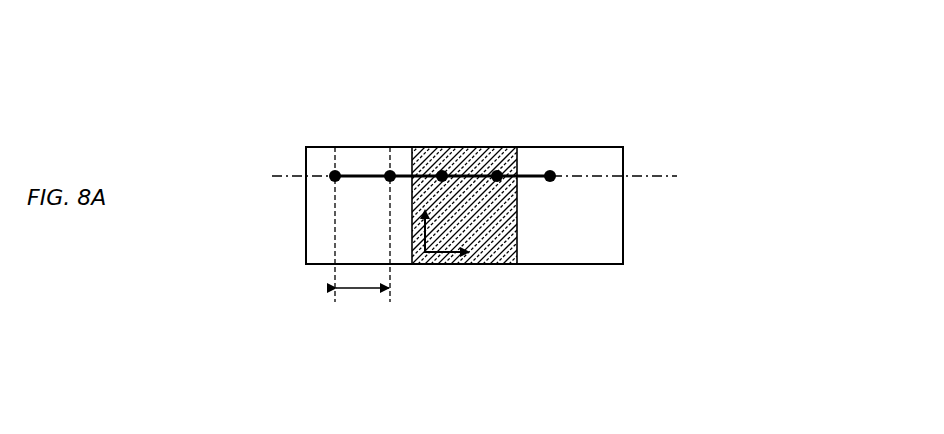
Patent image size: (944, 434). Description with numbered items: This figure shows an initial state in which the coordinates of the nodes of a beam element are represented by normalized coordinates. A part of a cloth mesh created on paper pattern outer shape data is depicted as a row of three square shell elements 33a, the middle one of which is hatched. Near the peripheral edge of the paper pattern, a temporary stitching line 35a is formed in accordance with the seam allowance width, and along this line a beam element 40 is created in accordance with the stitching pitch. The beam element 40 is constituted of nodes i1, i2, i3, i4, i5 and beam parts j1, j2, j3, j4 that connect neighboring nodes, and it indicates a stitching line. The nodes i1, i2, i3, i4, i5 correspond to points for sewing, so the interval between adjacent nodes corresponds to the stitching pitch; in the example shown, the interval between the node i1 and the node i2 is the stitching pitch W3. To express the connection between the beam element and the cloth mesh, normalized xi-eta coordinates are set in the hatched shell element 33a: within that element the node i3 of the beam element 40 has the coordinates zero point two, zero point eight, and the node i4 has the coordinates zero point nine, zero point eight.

The beam element 40 is at (326, 188).
The shell element 33a is at (305, 243).
The temporary stitching line 35a is at (657, 178).
The stitching pitch W3 is at (362, 309).
The node i1 is at (334, 170).
The beam part j1 is at (366, 172).
The node i2 is at (390, 170).
The beam part j2 is at (407, 172).
The node i3 is at (449, 172).
The beam part j3 is at (478, 172).
The node i4 is at (498, 165).
The beam part j4 is at (528, 172).
The node i5 is at (559, 172).